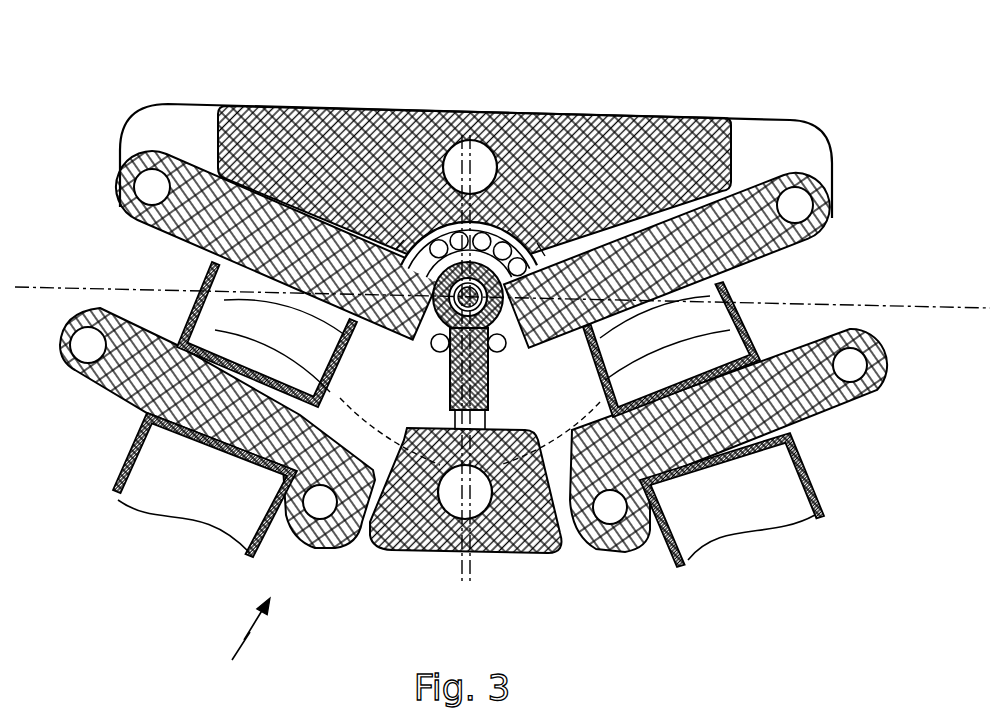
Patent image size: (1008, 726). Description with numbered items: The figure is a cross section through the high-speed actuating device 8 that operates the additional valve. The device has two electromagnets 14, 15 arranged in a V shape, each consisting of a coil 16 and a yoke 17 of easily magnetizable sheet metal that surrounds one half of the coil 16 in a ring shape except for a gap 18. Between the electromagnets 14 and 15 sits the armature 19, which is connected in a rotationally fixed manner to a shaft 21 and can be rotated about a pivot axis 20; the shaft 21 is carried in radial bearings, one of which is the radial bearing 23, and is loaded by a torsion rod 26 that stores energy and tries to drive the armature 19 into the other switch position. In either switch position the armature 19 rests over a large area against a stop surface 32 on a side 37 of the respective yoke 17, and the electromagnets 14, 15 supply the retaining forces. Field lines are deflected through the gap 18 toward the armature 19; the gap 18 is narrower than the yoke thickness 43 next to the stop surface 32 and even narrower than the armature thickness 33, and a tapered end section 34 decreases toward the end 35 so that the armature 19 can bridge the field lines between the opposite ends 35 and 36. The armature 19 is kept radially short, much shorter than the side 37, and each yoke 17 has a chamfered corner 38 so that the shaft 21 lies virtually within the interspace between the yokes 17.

The high-speed actuating device 8 is at (242, 637).
The electromagnet 14 is at (121, 452).
The electromagnet 15 is at (810, 469).
The coil 16 is at (185, 500).
The yoke 17 is at (162, 248).
The gap 18 is at (350, 225).
The armature 19 is at (456, 560).
The pivot axis 20 is at (522, 170).
The shaft 21 is at (466, 140).
The radial bearing 23 is at (440, 180).
The torsion rod 26 is at (497, 225).
The stop surface 32 is at (304, 545).
The thickness 33 is at (480, 560).
The end section 34 is at (340, 352).
The end 35 is at (352, 330).
The end 36 is at (645, 316).
The side 37 is at (378, 560).
The corner 38 is at (400, 210).
The thickness 43 is at (345, 380).